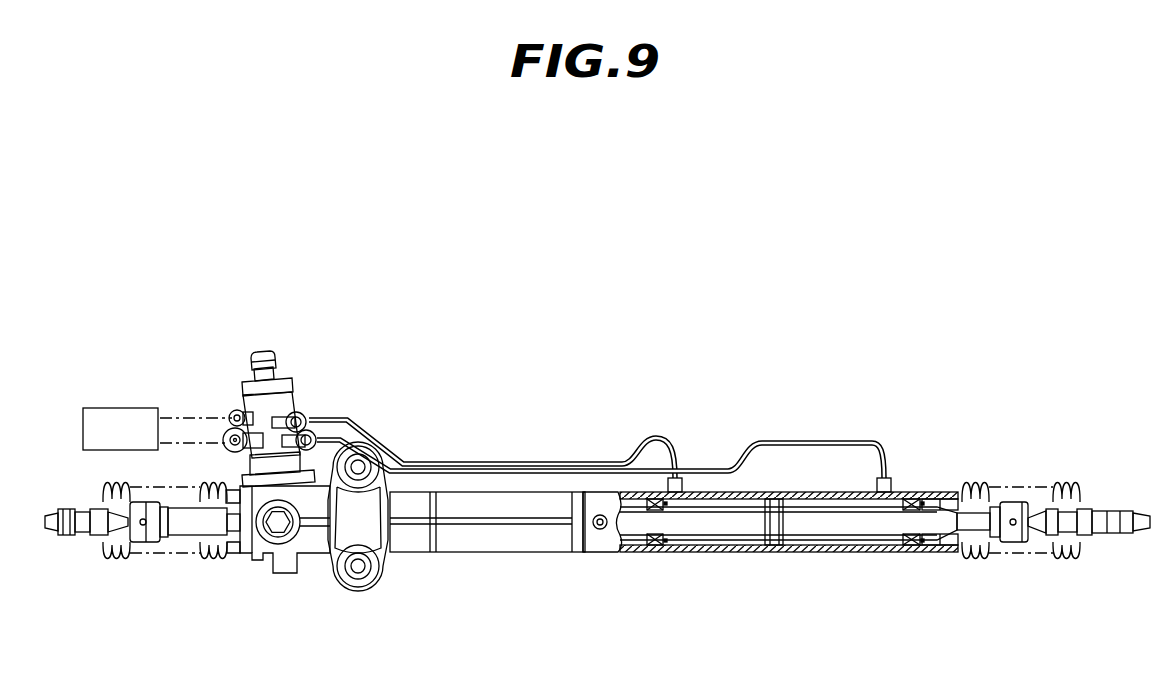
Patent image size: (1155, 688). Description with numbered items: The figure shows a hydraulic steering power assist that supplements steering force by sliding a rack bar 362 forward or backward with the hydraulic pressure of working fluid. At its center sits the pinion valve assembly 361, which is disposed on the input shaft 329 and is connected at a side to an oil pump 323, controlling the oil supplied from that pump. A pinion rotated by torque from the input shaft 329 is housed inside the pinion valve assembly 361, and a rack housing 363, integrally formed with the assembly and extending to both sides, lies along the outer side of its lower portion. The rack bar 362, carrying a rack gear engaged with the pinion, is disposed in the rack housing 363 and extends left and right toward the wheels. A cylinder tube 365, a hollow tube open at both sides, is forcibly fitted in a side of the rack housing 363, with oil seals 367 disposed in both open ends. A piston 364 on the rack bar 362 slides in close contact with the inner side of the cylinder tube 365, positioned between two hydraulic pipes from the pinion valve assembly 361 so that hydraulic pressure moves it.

The oil pump 323 is at (122, 408).
The input shaft 329 is at (277, 354).
The pinion valve assembly 361 is at (319, 398).
The rack bar 362 is at (700, 528).
The rack housing 363 is at (507, 548).
The piston 364 is at (775, 547).
The cylinder tube 365 is at (598, 548).
The oil seal 367 is at (655, 548).